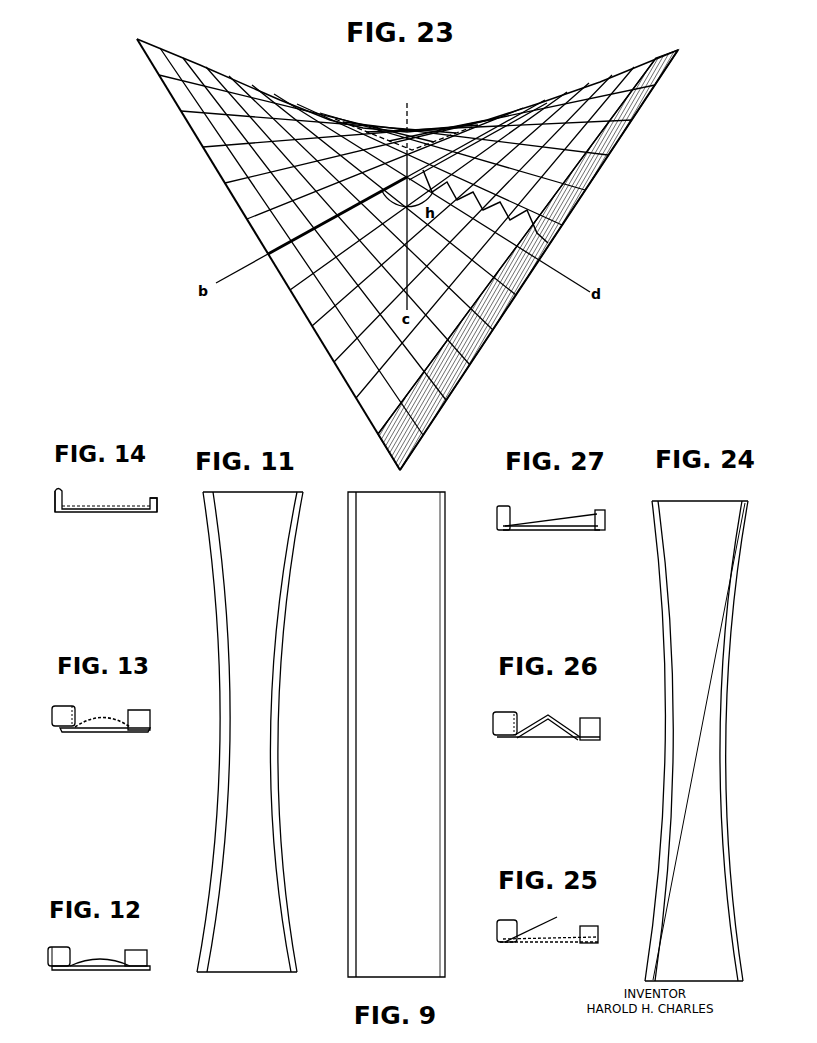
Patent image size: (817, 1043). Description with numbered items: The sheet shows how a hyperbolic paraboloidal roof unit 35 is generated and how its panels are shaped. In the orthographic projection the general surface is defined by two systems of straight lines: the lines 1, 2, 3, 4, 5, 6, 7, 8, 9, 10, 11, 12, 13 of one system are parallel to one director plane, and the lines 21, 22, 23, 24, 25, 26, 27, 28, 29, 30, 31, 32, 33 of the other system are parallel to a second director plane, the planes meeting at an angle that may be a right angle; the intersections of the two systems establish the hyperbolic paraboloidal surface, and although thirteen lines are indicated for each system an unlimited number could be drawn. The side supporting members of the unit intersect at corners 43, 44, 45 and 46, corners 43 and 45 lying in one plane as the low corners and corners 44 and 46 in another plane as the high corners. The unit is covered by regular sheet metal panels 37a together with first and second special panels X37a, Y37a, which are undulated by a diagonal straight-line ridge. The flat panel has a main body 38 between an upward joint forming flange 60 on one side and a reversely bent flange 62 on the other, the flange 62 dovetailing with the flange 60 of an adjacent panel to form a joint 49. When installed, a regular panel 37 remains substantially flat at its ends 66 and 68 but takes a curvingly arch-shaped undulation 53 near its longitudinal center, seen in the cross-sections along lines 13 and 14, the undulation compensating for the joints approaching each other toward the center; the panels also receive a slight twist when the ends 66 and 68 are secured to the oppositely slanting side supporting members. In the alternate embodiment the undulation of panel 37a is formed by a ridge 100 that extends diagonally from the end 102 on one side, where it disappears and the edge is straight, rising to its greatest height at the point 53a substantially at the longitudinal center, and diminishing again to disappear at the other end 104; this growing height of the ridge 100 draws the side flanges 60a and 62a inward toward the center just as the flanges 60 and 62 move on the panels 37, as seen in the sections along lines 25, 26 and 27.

In FIG. 23, the straight line of first system 1 is at (399, 471).
In FIG. 23, the straight line of first system 2 is at (378, 434).
In FIG. 23, the straight line of first system 3 is at (356, 398).
In FIG. 23, the straight line of first system 4 is at (334, 362).
In FIG. 23, the straight line of first system 5 is at (312, 326).
In FIG. 23, the straight line of first system 6 is at (290, 290).
In FIG. 23, the straight line of first system 7 is at (268, 254).
In FIG. 23, the straight line of first system 8 is at (246, 219).
In FIG. 23, the straight line of first system 9 is at (224, 183).
In FIG. 23, the straight line of first system 10 is at (202, 147).
In FIG. 9, the straight line of first system 10 is at (430, 876).
In FIG. 23, the straight line of first system 11 is at (180, 111).
In FIG. 23, the straight line of first system 12 is at (158, 75).
In FIG. 11, the straight line of first system 12 is at (307, 968).
In FIG. 23, the straight line of first system 13 is at (137, 39).
In FIG. 11, the straight line of first system 13 is at (310, 713).
In FIG. 11, the section line 14 is at (323, 472).
In FIG. 23, the straight line of second system 21 is at (405, 471).
In FIG. 23, the straight line of second system 22 is at (424, 435).
In FIG. 23, the straight line of second system 23 is at (447, 400).
In FIG. 23, the straight line of second system 24 is at (471, 365).
In FIG. 23, the straight line of second system 25 is at (494, 330).
In FIG. 24, the straight line of second system 25 is at (760, 928).
In FIG. 23, the straight line of second system 26 is at (514, 294).
In FIG. 24, the straight line of second system 26 is at (763, 725).
In FIG. 23, the straight line of second system 27 is at (545, 261).
In FIG. 24, the straight line of second system 27 is at (765, 515).
In FIG. 23, the straight line of second system 28 is at (556, 228).
In FIG. 23, the straight line of second system 29 is at (585, 190).
In FIG. 23, the straight line of second system 30 is at (610, 155).
In FIG. 23, the straight line of second system 31 is at (633, 120).
In FIG. 23, the straight line of second system 32 is at (656, 85).
In FIG. 23, the straight line of second system 33 is at (688, 47).
In FIG. 23, the hyperbolic paraboloidal unit 35 is at (165, 262).
In FIG. 11, the sheet metal panel 37 is at (287, 806).
In FIG. 9, the sheet metal panel 37 is at (452, 833).
In FIG. 23, the sheet metal panel 37a is at (228, 157).
In FIG. 24, the sheet metal panel 37a is at (663, 661).
In FIG. 23, the first special panel X37a is at (202, 74).
In FIG. 23, the second special panel Y37a is at (661, 60).
In FIG. 9, the main body 38 is at (396, 977).
In FIG. 23, the low corner 43 is at (395, 468).
In FIG. 23, the high corner 44 is at (678, 50).
In FIG. 23, the low corner 45 is at (407, 122).
In FIG. 23, the high corner 46 is at (137, 39).
In FIG. 23, the dovetailed joint 49 is at (275, 200).
In FIG. 13, the undulation 53 is at (106, 716).
In FIG. 23, the undulation 53a is at (548, 240).
In FIG. 26, the undulation 53a is at (545, 713).
In FIG. 14, the upward joint forming flange 60 is at (158, 501).
In FIG. 13, the upward joint forming flange 60 is at (136, 711).
In FIG. 12, the upward joint forming flange 60 is at (148, 963).
In FIG. 11, the upward joint forming flange 60 is at (283, 859).
In FIG. 9, the upward joint forming flange 60 is at (446, 676).
In FIG. 27, the side flange 60a is at (607, 516).
In FIG. 26, the side flange 60a is at (584, 738).
In FIG. 25, the side flange 60a is at (598, 943).
In FIG. 24, the side flange 60a is at (735, 623).
In FIG. 14, the reversely bent flange 62 is at (55, 496).
In FIG. 13, the reversely bent flange 62 is at (52, 716).
In FIG. 12, the reversely bent flange 62 is at (48, 956).
In FIG. 11, the reversely bent flange 62 is at (218, 806).
In FIG. 9, the reversely bent flange 62 is at (352, 661).
In FIG. 27, the side flange 62a is at (497, 516).
In FIG. 26, the side flange 62a is at (497, 719).
In FIG. 25, the side flange 62a is at (497, 923).
In FIG. 24, the side flange 62a is at (668, 619).
In FIG. 12, the panel end 66 is at (110, 963).
In FIG. 11, the panel end 66 is at (248, 971).
In FIG. 14, the panel end 68 is at (100, 507).
In FIG. 11, the panel end 68 is at (256, 493).
In FIG. 23, the ridge 100 is at (583, 141).
In FIG. 27, the ridge 100 is at (597, 514).
In FIG. 26, the ridge 100 is at (553, 713).
In FIG. 25, the ridge 100 is at (557, 917).
In FIG. 24, the ridge 100 is at (686, 835).
In FIG. 24, the panel end 102 is at (695, 981).
In FIG. 24, the panel end 104 is at (705, 501).